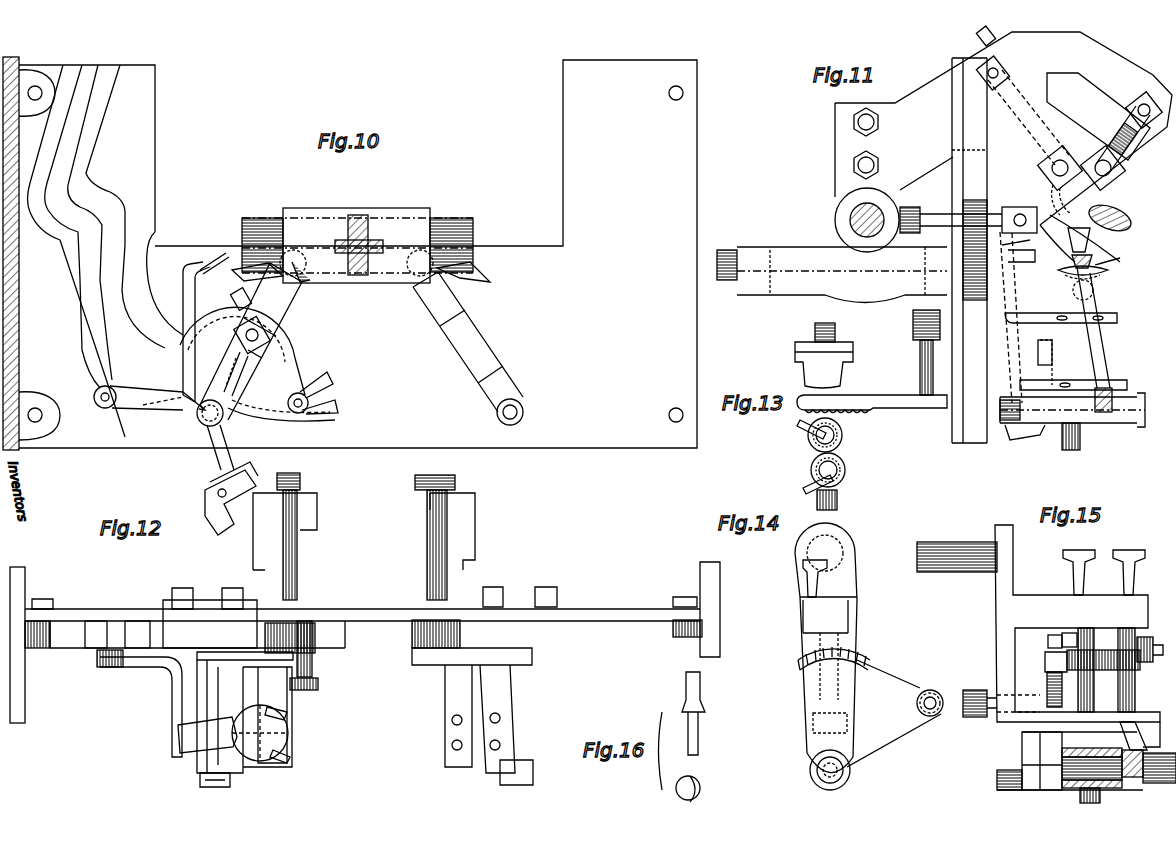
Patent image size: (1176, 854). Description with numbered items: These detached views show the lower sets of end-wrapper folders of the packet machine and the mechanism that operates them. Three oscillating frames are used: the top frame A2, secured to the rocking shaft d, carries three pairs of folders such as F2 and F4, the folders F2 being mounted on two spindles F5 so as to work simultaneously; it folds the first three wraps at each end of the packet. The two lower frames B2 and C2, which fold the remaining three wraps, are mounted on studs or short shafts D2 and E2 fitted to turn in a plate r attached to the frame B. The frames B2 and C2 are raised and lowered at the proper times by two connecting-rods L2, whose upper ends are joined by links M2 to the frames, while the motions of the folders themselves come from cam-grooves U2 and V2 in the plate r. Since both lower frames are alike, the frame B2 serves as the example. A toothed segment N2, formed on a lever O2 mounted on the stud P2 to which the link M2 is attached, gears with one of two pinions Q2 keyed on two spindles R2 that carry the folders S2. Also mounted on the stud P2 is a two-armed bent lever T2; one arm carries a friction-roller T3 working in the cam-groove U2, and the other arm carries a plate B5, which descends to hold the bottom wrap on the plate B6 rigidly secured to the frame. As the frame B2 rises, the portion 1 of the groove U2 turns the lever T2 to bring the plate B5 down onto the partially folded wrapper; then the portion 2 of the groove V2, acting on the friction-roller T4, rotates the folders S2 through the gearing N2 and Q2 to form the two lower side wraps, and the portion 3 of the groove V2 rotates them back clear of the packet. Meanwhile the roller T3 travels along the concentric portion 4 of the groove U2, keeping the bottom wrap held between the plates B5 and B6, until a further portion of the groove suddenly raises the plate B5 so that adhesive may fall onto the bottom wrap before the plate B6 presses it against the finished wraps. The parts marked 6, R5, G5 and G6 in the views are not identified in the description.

In FIG. 10, the frame B is at (14, 290).
In FIG. 12, the frame B is at (26, 680).
In FIG. 10, the plate r is at (358, 254).
In FIG. 11, the plate r is at (952, 130).
In FIG. 12, the plate r is at (136, 620).
In FIG. 10, the cam-groove U2 is at (78, 226).
In FIG. 12, the cam-groove U2 is at (96, 634).
In FIG. 10, the cam-groove V2 is at (134, 206).
In FIG. 12, the cam-groove V2 is at (137, 634).
In FIG. 10, the portion of cam-groove 1 is at (100, 355).
In FIG. 10, the portion of cam-groove 2 is at (254, 383).
In FIG. 10, the portion of cam-groove 3 is at (170, 365).
In FIG. 10, the concentric portion of cam-groove 4 is at (77, 251).
In FIG. 10, the bar 6 is at (76, 214).
In FIG. 10, the friction-roller T3 is at (105, 390).
In FIG. 12, the friction-roller T3 is at (100, 668).
In FIG. 10, the two-armed bent lever T2 is at (196, 318).
In FIG. 11, the two-armed bent lever T2 is at (1100, 336).
In FIG. 12, the two-armed bent lever T2 is at (158, 668).
In FIG. 10, the friction-roller T4 is at (326, 390).
In FIG. 14, the friction-roller T4 is at (930, 690).
In FIG. 15, the friction-roller T4 is at (1001, 695).
In FIG. 12, the friction-roller T4 is at (313, 650).
In FIG. 10, the stud P2 is at (199, 420).
In FIG. 11, the stud P2 is at (1142, 412).
In FIG. 14, the stud P2 is at (830, 770).
In FIG. 15, the stud P2 is at (1086, 761).
In FIG. 10, the link M2 is at (208, 456).
In FIG. 11, the link M2 is at (1082, 442).
In FIG. 10, the connecting-rod L2 is at (228, 528).
In FIG. 10, the plate B5 is at (214, 262).
In FIG. 10, the plate B6 is at (494, 274).
In FIG. 11, the plate B6 is at (1104, 274).
In FIG. 12, the plate B6 is at (233, 733).
In FIG. 10, the stud or short shaft D2 is at (296, 256).
In FIG. 11, the stud or short shaft D2 is at (717, 248).
In FIG. 13, the stud or short shaft D2 is at (836, 332).
In FIG. 15, the stud or short shaft D2 is at (948, 546).
In FIG. 12, the stud or short shaft D2 is at (298, 558).
In FIG. 10, the oscillating frame B2 is at (288, 292).
In FIG. 11, the oscillating frame B2 is at (1063, 336).
In FIG. 13, the oscillating frame B2 is at (824, 365).
In FIG. 14, the oscillating frame B2 is at (826, 648).
In FIG. 15, the oscillating frame B2 is at (1077, 636).
In FIG. 12, the oscillating frame B2 is at (245, 719).
In FIG. 10, the stud or short shaft E2 is at (418, 290).
In FIG. 12, the stud or short shaft E2 is at (428, 555).
In FIG. 10, the oscillating frame C2 is at (532, 402).
In FIG. 12, the oscillating frame C2 is at (472, 716).
In FIG. 10, the toothed segment N2 is at (278, 352).
In FIG. 13, the toothed segment N2 is at (872, 361).
In FIG. 14, the toothed segment N2 is at (842, 662).
In FIG. 15, the toothed segment N2 is at (1048, 666).
In FIG. 12, the toothed segment N2 is at (305, 690).
In FIG. 10, the pinion Q2 is at (240, 322).
In FIG. 13, the pinion Q2 is at (845, 432).
In FIG. 15, the pinion Q2 is at (1120, 648).
In FIG. 10, the spindle R2 is at (235, 374).
In FIG. 13, the spindle R2 is at (816, 446).
In FIG. 15, the spindle R2 is at (1114, 670).
In FIG. 11, the block R5 is at (1082, 261).
In FIG. 11, the oscillating frame A2 is at (1003, 128).
In FIG. 11, the link G6 is at (1022, 125).
In FIG. 11, the rod G5 is at (1125, 126).
In FIG. 11, the rocking shaft d is at (850, 213).
In FIG. 11, the spindle F5 is at (932, 213).
In FIG. 11, the folder F4 is at (1118, 218).
In FIG. 11, the folder F2 is at (1080, 245).
In FIG. 13, the folder S2 is at (800, 424).
In FIG. 14, the folder S2 is at (823, 566).
In FIG. 15, the folder S2 is at (1104, 564).
In FIG. 12, the folder S2 is at (288, 714).
In FIG. 16, the folder S2 is at (700, 680).
In FIG. 14, the lever O2 is at (890, 743).